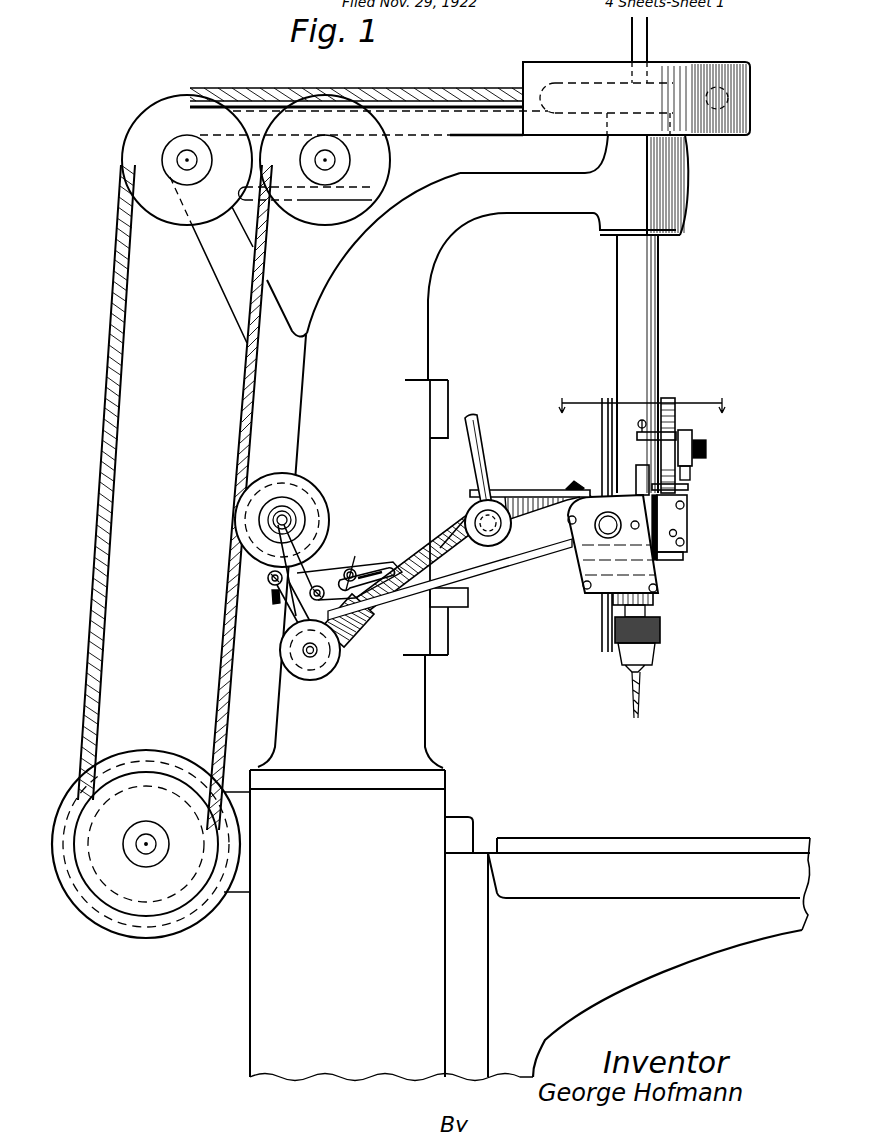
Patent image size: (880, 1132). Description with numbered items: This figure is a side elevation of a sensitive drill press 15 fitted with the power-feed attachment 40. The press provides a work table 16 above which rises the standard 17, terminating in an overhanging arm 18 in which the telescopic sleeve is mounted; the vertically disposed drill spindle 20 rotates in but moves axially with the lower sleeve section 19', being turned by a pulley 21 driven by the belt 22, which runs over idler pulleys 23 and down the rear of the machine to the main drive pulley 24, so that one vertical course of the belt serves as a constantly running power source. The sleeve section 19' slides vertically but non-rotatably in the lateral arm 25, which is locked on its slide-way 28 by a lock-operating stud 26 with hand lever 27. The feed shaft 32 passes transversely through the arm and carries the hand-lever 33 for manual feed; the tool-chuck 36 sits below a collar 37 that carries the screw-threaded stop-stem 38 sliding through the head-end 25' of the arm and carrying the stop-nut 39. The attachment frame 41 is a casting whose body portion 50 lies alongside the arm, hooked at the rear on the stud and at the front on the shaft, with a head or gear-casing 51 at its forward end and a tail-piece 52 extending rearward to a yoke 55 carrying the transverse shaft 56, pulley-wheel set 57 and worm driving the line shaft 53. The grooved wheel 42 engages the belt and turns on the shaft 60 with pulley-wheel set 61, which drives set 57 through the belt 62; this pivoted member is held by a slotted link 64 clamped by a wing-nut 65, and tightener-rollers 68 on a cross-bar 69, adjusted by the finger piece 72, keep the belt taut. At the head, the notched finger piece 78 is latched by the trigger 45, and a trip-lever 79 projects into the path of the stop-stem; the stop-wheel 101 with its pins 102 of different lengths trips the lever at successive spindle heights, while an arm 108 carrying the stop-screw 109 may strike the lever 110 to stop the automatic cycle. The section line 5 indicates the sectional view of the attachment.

The section line 5— 5 is at (644, 404).
The drill press 15 is at (447, 739).
The work table 16 is at (549, 856).
The standard 17 is at (380, 385).
The overhanging arm 18 is at (676, 208).
The lower section of sleeve 19' is at (664, 364).
The drill spindle 20 is at (640, 45).
The pulley 21 is at (707, 133).
The belt 22 is at (115, 531).
The idler pulleys 23 is at (300, 110).
The main drive pulley 24 is at (143, 883).
The lateral arm 25 is at (526, 540).
The head-end of arm 25' is at (695, 552).
The lock-operating stud 26 is at (493, 512).
The hand lever 27 is at (467, 416).
The slide-way 28 is at (445, 398).
The shaft 32 is at (596, 525).
The hand-lever 33 is at (602, 440).
The tool-chuck 36 is at (660, 634).
The collar 37 is at (655, 598).
The stop-stem 38 is at (668, 400).
The stop-nut 39 is at (683, 473).
The attachment 40 is at (418, 542).
The frame 41 is at (451, 514).
The grooved wheel 42 is at (296, 473).
The trigger 45 is at (677, 517).
The body portion 50 is at (548, 540).
The head 51 is at (600, 588).
The tail-piece 52 is at (360, 643).
The line shaft 53 is at (468, 607).
The yoke 55 is at (344, 648).
The transverse shaft 56 is at (308, 660).
The pulley-wheel set 57 is at (292, 656).
The shaft 60 is at (290, 515).
The pulley-wheel set 61 is at (300, 517).
The belt 62 is at (311, 546).
The slotted link 64 is at (345, 568).
The wing-nut 65 is at (354, 566).
The tightener-rollers 68 is at (268, 578).
The cross-bar 69 is at (273, 598).
The finger piece 72 is at (282, 605).
The finger piece 78 is at (674, 532).
The trip-lever 79 is at (688, 490).
The stop-wheel 101 is at (700, 446).
The pins 102 is at (688, 432).
The arm 108 is at (640, 434).
The stop-screw 109 is at (640, 420).
The lever 110 is at (636, 469).